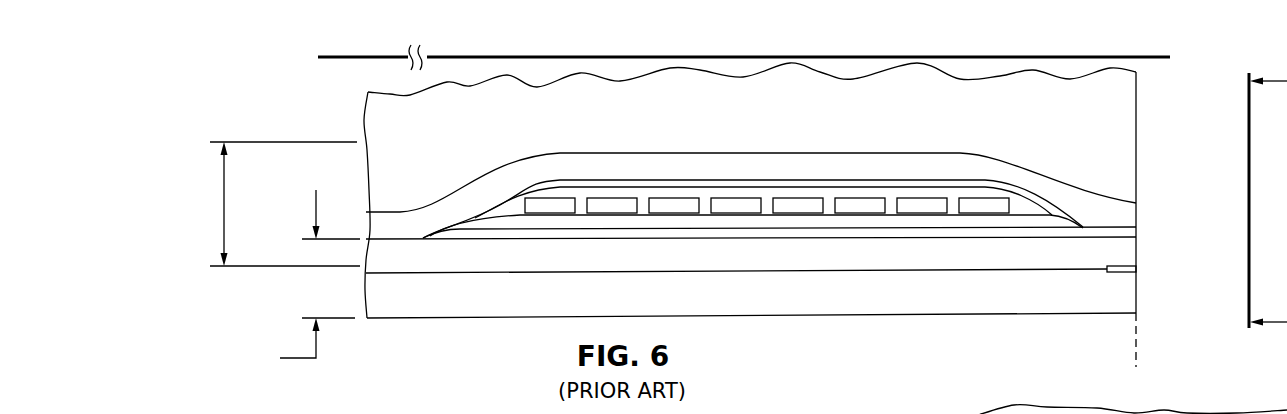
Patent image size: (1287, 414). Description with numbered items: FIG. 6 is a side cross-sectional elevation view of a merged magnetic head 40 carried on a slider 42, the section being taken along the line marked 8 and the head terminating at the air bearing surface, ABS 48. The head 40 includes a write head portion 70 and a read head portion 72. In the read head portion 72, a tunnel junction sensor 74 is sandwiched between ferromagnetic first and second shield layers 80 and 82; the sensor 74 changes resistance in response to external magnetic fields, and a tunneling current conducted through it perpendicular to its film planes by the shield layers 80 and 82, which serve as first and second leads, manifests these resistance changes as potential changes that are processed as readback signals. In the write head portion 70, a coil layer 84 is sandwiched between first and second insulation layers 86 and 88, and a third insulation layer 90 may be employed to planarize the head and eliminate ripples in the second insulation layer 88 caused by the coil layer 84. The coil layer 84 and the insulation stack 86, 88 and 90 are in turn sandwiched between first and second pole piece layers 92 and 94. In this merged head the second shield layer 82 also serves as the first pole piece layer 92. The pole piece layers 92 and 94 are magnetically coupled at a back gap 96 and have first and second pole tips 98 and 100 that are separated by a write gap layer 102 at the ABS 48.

The section line 8- 8 is at (325, 46).
The merged magnetic head 40 is at (342, 99).
The slider 42 is at (1122, 106).
The air bearing surface (ABS) 48 is at (1136, 359).
The write head portion 70 is at (271, 204).
The read head portion 72 is at (269, 343).
The tunnel junction sensor 74 is at (1136, 270).
The first shield layer 80 is at (903, 298).
The second shield layer 82 is at (751, 303).
The coil layer 84 is at (732, 202).
The first insulation layer 86 is at (737, 222).
The second insulation layer 88 is at (1028, 203).
The third insulation layer 90 is at (673, 182).
The first pole piece layer 92 is at (987, 250).
The second pole piece layer 94 is at (903, 163).
The back gap 96 is at (398, 240).
The first pole tip 98 is at (1136, 252).
The second pole tip 100 is at (1130, 211).
The write gap layer 102 is at (1136, 231).